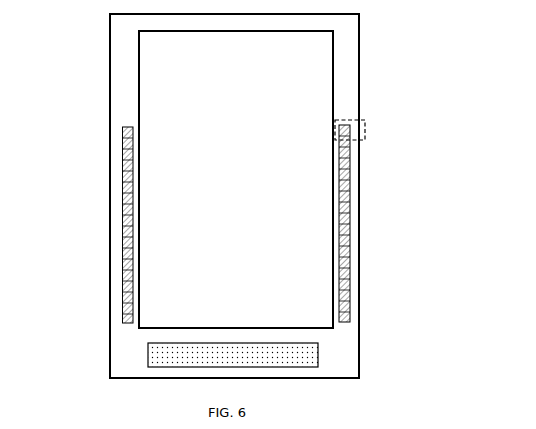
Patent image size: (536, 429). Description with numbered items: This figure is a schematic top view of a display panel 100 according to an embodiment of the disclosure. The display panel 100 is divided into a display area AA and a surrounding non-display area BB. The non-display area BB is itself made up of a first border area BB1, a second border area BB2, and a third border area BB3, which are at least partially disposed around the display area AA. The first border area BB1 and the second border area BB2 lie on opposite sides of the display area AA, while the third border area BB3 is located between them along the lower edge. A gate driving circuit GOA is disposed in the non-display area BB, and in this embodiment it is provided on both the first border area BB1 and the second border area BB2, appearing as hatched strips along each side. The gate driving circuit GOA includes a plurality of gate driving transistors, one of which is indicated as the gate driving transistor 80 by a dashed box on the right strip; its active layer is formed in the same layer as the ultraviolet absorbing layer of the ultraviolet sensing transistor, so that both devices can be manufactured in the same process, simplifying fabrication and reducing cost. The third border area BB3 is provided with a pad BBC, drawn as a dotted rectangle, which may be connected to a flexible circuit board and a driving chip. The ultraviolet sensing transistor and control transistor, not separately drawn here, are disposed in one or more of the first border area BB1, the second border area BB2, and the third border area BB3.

The display panel 100 is at (359, 21).
The non-display area BB is at (345, 51).
The display area AA is at (325, 74).
The gate driving transistor 80 is at (365, 131).
The first border area BB1 is at (118, 216).
The second border area BB2 is at (354, 233).
The third border area BB3 is at (350, 371).
The gate driving circuit GOA is at (125, 272).
The pad BBC is at (308, 357).